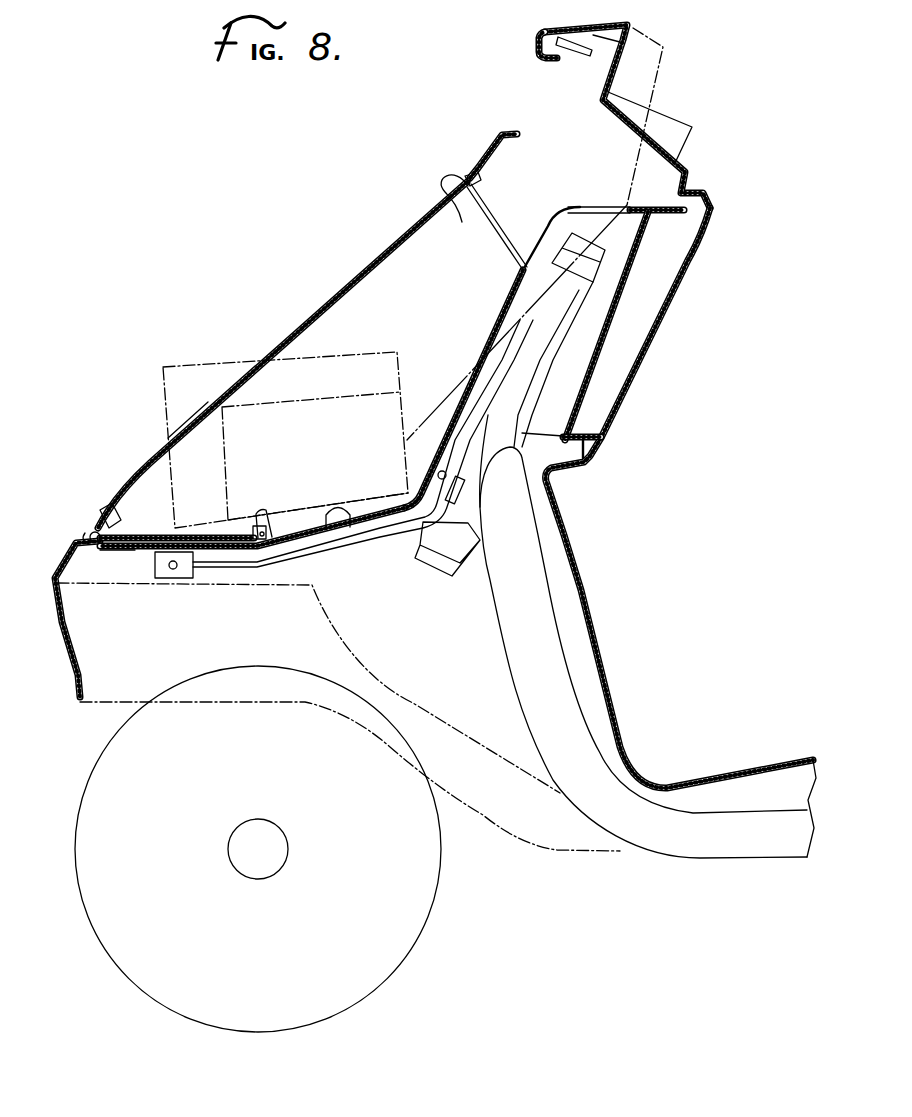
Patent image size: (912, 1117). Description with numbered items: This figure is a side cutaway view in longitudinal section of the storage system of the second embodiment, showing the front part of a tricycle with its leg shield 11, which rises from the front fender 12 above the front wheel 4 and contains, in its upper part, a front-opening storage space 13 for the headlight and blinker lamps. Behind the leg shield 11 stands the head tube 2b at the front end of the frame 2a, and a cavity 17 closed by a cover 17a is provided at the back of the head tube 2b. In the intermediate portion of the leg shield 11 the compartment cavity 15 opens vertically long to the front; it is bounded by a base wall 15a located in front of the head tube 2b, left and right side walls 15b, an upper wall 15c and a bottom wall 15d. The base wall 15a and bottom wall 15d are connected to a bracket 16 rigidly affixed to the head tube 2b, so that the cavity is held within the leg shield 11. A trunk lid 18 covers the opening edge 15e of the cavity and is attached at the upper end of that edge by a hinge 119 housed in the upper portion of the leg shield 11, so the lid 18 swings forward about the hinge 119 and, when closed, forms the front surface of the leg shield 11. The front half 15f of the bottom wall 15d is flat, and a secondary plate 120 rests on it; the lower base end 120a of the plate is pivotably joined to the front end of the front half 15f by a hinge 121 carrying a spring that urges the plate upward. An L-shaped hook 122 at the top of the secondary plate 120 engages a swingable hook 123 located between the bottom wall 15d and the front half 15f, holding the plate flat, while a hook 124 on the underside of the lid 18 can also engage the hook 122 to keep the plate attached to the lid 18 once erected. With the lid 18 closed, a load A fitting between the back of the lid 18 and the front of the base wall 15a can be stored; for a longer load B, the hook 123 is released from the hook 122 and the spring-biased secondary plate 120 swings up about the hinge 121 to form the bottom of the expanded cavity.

The frame 2a is at (558, 700).
The head tube 2b is at (560, 337).
The front wheel 4 is at (405, 965).
The leg shield 11 is at (706, 137).
The front fender 12 is at (72, 660).
The storage space 13 is at (540, 58).
The compartment cavity 15 is at (328, 404).
The base wall 15a is at (488, 352).
The side wall 15b is at (372, 262).
The upper wall 15c is at (496, 228).
The bottom wall 15d is at (345, 528).
The opening edge 15e is at (460, 211).
The front half 15f is at (148, 552).
The bracket 16 is at (270, 553).
The cavity 17 is at (679, 498).
The cover 17a is at (682, 270).
The trunk lid 18 is at (178, 420).
The hinge 119 is at (468, 173).
The secondary plate 120 is at (192, 523).
The lower base end 120a is at (116, 550).
The hinge 121 is at (92, 530).
The L-shaped hook 122 is at (256, 523).
The swingable hook 123 is at (270, 513).
The hook 124 is at (109, 512).
The load A is at (287, 403).
The load B is at (168, 366).